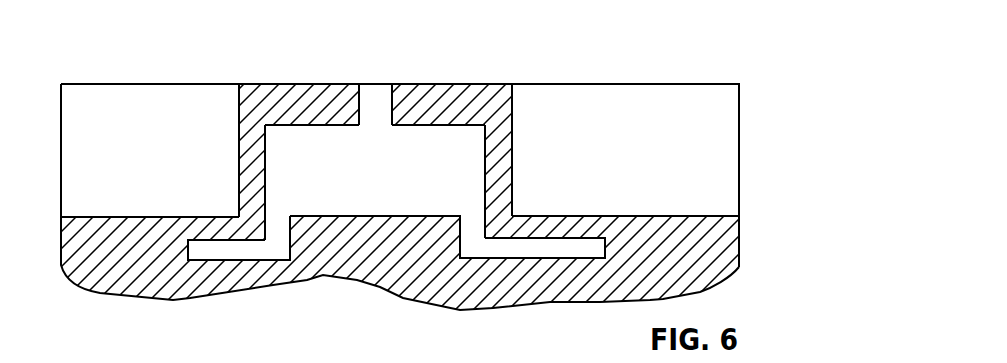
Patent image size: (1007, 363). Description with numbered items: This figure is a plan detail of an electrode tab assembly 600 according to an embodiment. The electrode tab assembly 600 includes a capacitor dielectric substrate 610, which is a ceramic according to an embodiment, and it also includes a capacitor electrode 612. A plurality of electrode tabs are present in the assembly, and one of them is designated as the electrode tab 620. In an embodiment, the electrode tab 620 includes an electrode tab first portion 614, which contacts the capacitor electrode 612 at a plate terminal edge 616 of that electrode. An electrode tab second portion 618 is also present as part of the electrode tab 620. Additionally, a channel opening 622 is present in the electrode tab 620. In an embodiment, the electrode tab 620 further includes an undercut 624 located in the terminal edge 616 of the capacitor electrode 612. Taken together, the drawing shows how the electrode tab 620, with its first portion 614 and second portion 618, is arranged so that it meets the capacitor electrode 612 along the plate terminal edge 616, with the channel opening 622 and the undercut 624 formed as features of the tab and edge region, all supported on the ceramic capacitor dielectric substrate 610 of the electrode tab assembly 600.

The electrode tab assembly 600 is at (800, 88).
The capacitor dielectric substrate 610 is at (642, 105).
The capacitor electrode 612 is at (128, 235).
The electrode tab first portion 614 is at (252, 150).
The plate terminal edge 616 is at (585, 215).
The electrode tab second portion 618 is at (295, 90).
The electrode tab 620 is at (240, 183).
The channel opening 622 is at (483, 175).
The undercut 624 is at (227, 259).